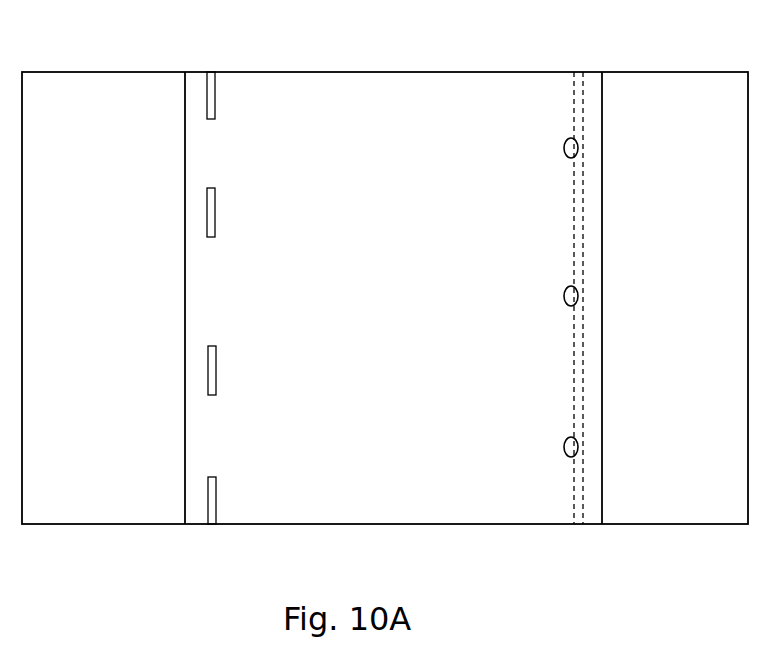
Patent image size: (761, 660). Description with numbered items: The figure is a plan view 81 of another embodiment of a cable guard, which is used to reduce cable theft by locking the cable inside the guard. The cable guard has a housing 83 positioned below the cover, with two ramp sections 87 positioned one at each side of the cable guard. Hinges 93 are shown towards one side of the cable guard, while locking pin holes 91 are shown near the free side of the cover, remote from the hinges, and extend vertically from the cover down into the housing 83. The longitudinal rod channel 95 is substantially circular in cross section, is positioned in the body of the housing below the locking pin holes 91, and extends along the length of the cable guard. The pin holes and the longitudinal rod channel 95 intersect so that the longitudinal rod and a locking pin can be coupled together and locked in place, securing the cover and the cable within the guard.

The plan view 81 is at (90, 573).
The housing 83 is at (519, 535).
The ramp sections 87 is at (110, 350).
The locking pin holes 91 is at (564, 153).
The hinges 93 is at (219, 98).
The longitudinal rod channel 95 is at (579, 72).